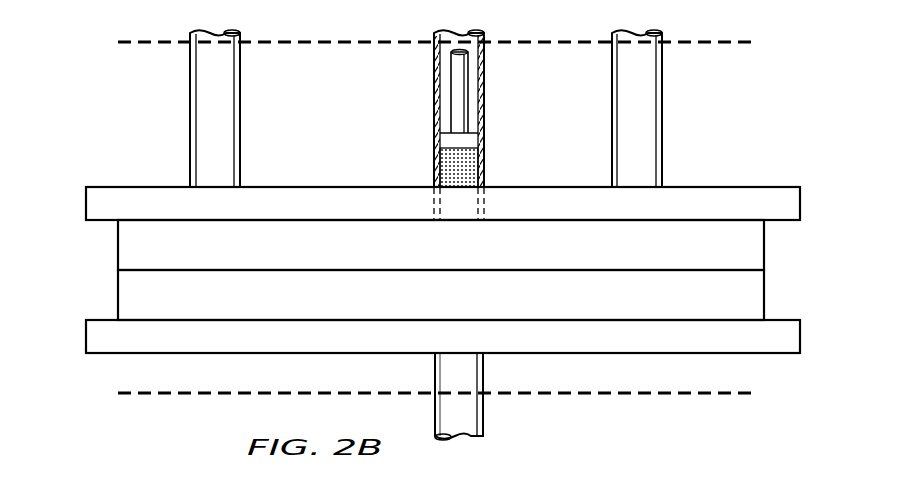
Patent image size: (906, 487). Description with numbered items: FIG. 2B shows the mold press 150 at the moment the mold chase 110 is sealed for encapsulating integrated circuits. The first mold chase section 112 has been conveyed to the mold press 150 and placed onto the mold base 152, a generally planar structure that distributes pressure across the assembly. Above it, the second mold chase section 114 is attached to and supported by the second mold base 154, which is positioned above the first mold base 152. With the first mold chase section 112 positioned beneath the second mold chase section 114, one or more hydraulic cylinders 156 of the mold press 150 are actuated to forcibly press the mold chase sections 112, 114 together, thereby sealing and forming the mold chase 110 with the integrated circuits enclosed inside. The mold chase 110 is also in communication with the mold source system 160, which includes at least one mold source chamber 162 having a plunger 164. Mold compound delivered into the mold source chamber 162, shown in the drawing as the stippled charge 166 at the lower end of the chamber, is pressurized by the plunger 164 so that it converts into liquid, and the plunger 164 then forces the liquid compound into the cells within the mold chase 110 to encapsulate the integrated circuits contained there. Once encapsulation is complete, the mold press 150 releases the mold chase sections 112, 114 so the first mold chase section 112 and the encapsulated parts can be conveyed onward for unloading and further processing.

The mold chase 110 is at (426, 270).
The first mold chase section 112 is at (764, 288).
The second mold chase section 114 is at (764, 252).
The mold press 150 is at (172, 406).
The mold base 152 is at (800, 335).
The second mold base 154 is at (800, 203).
The hydraulic cylinder 156 is at (483, 412).
The mold source system 160 is at (170, 34).
The mold source chamber 162 is at (190, 162).
The plunger 164 is at (468, 102).
The porous plug 166 is at (479, 160).